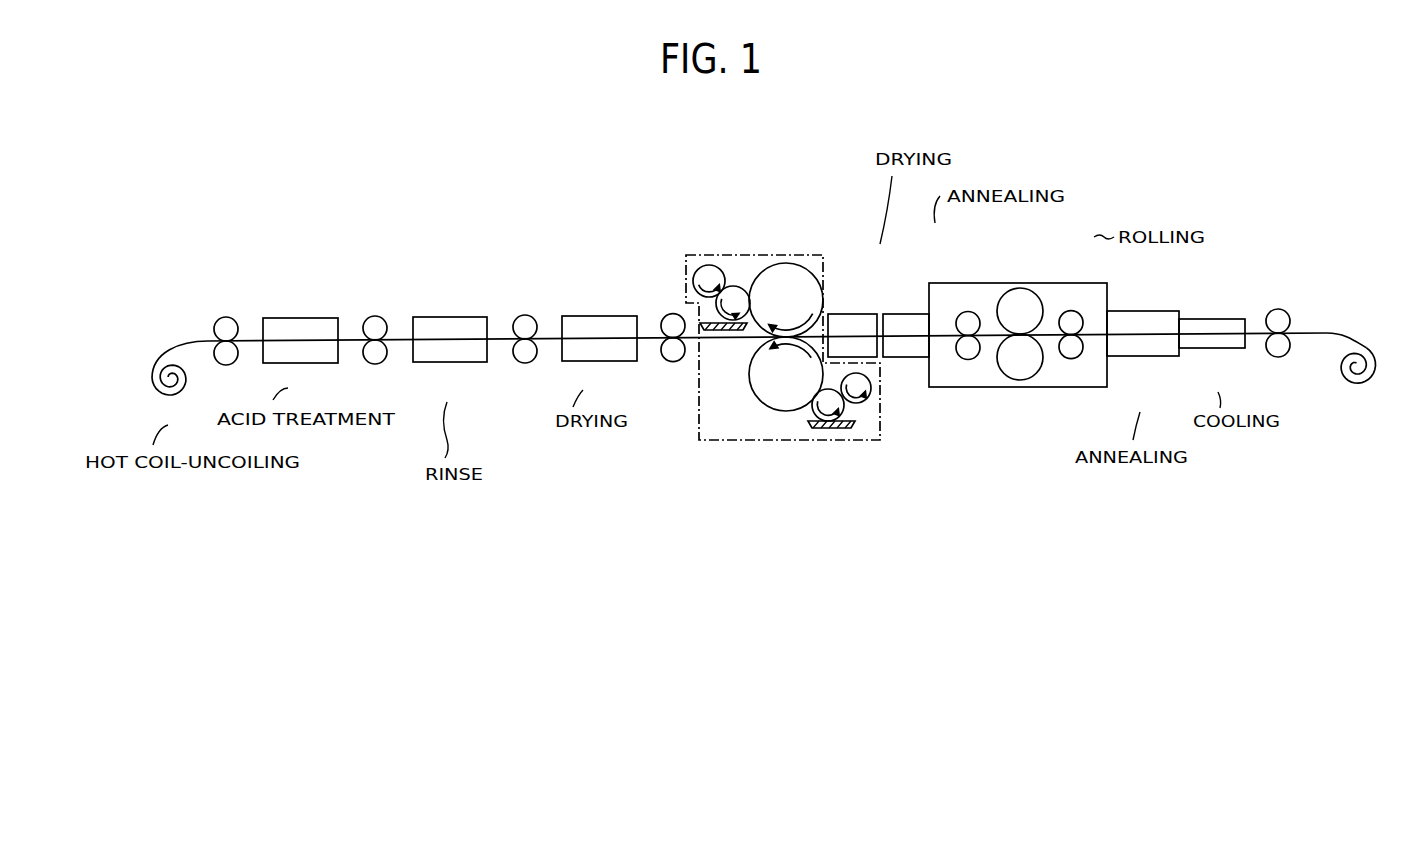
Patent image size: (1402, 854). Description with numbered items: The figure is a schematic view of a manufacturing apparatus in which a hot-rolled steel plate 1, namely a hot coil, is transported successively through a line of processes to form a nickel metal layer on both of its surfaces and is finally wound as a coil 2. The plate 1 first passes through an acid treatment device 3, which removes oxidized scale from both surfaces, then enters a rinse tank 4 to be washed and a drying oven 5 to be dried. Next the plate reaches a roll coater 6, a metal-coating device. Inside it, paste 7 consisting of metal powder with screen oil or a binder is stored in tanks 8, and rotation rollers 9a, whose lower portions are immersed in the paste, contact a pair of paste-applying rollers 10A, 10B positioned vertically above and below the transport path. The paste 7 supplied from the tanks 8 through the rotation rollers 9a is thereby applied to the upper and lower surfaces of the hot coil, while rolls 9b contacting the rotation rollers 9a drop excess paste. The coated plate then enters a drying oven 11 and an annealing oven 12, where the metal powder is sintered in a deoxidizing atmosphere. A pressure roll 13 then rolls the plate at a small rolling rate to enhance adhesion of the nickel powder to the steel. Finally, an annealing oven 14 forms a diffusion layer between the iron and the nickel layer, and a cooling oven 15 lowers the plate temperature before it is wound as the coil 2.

The hot-rolled steel plate 1 is at (169, 396).
The coil 2 is at (1367, 384).
The acid treatment device 3 is at (290, 363).
The rinse tank 4 is at (437, 362).
The drying oven 5 is at (583, 361).
The roll coater 6 is at (860, 440).
The paste 7 is at (732, 328).
The tanks 8 is at (706, 334).
The rotation rollers 9a is at (738, 298).
The rolls 9b is at (710, 268).
The paste-applying roller 10A is at (802, 277).
The paste-applying roller 10B is at (770, 395).
The drying oven 11 is at (865, 322).
The annealing oven 12 is at (915, 320).
The pressure roll 13 is at (1033, 353).
The annealing oven 14 is at (1143, 358).
The cooling oven 15 is at (1215, 348).